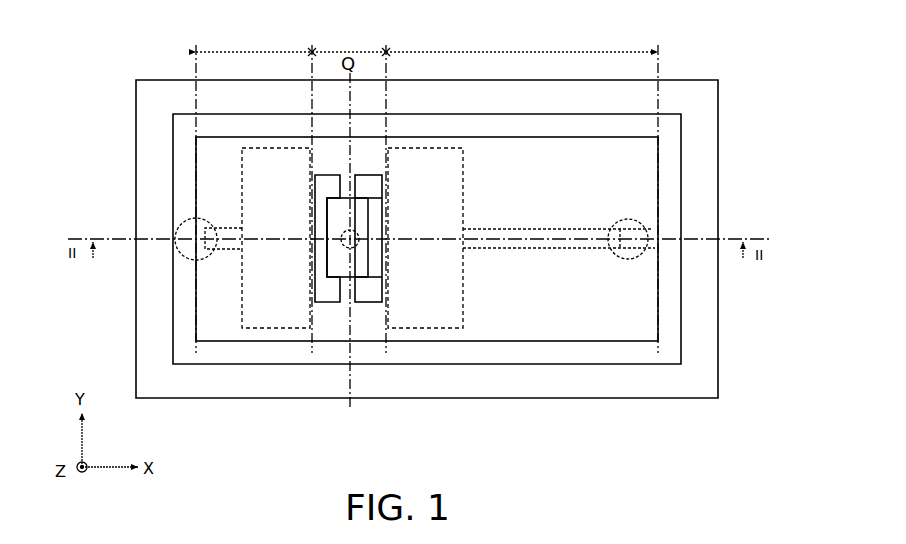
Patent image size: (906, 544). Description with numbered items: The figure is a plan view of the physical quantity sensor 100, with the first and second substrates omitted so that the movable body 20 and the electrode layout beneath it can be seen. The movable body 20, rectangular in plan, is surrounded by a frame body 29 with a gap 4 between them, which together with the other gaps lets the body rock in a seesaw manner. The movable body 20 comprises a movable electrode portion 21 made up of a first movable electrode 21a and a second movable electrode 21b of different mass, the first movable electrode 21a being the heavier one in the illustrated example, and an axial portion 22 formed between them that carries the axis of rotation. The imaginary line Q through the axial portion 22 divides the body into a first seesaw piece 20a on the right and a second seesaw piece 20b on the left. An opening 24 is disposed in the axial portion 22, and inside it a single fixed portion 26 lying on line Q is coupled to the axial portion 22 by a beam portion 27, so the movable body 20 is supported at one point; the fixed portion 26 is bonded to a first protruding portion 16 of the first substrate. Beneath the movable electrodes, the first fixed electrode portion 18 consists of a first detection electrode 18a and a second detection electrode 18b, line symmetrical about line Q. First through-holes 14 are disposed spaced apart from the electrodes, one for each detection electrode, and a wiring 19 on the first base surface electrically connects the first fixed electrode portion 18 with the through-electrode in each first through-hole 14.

The physical quantity sensor 100 is at (708, 40).
The gap 4 is at (504, 134).
The first through-hole 14 is at (178, 234).
The first protruding portion 16 is at (368, 190).
The first fixed electrode portion 18 is at (361, 293).
The first detection electrode 18a is at (435, 328).
The second detection electrode 18b is at (265, 328).
The wiring 19 is at (240, 250).
The movable body 20 is at (632, 178).
The first seesaw piece 20a is at (575, 322).
The second seesaw piece 20b is at (212, 318).
The movable electrode portion 21 is at (427, 40).
The first movable electrode 21a is at (522, 38).
The second movable electrode 21b is at (254, 38).
The axial portion 22 is at (349, 40).
The opening 24 is at (368, 289).
The fixed portion 26 is at (348, 250).
The beam portion 27 is at (352, 230).
The frame body 29 is at (692, 377).